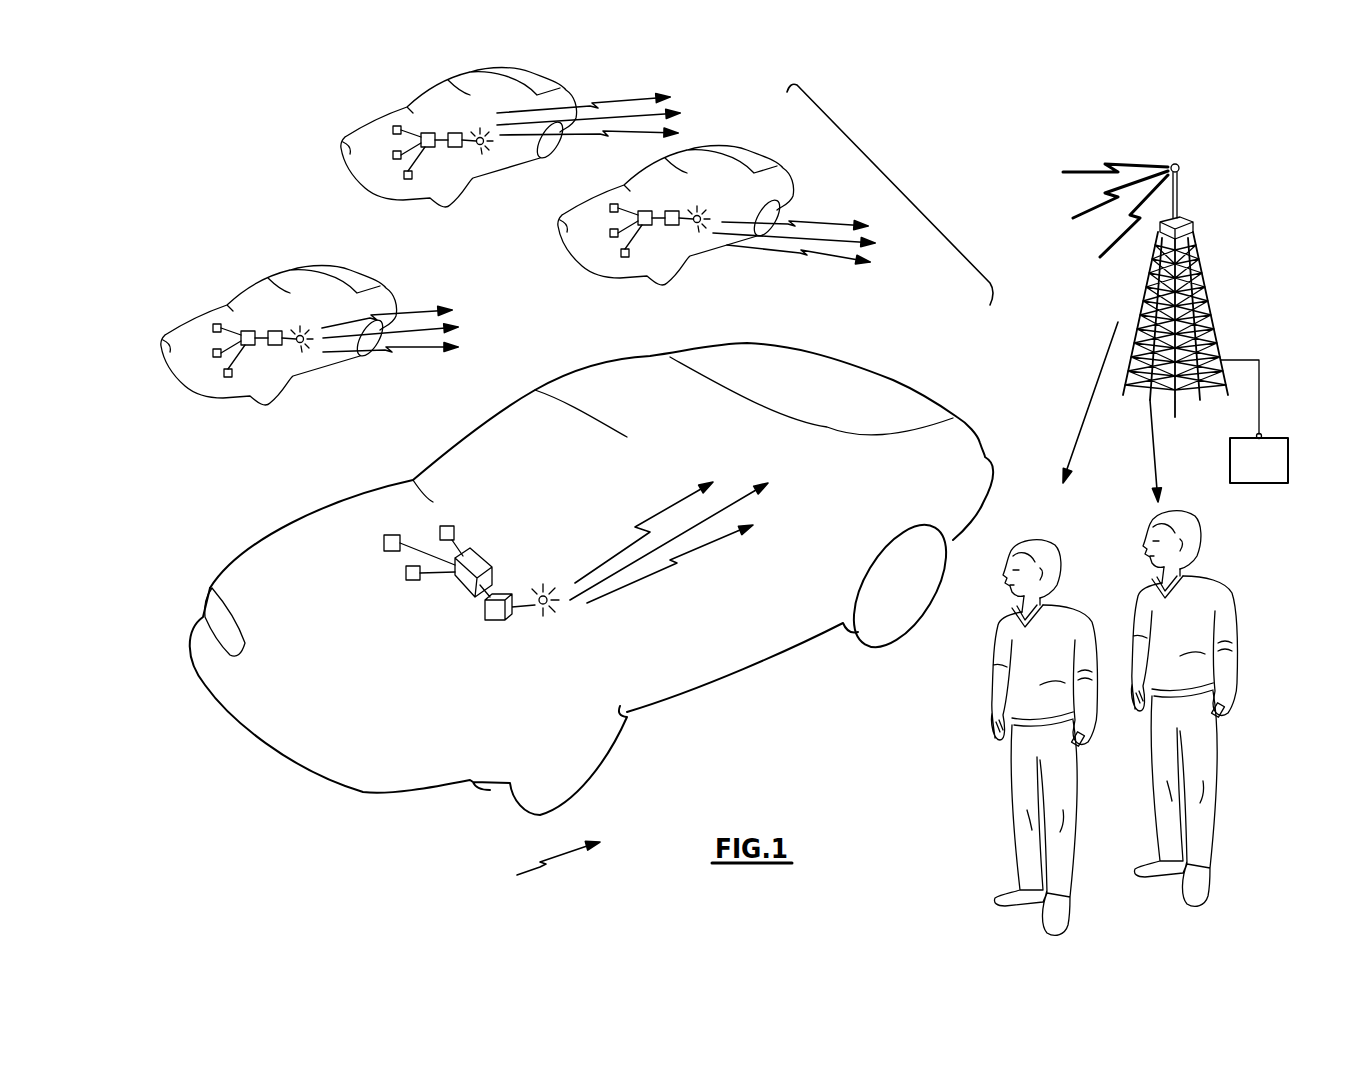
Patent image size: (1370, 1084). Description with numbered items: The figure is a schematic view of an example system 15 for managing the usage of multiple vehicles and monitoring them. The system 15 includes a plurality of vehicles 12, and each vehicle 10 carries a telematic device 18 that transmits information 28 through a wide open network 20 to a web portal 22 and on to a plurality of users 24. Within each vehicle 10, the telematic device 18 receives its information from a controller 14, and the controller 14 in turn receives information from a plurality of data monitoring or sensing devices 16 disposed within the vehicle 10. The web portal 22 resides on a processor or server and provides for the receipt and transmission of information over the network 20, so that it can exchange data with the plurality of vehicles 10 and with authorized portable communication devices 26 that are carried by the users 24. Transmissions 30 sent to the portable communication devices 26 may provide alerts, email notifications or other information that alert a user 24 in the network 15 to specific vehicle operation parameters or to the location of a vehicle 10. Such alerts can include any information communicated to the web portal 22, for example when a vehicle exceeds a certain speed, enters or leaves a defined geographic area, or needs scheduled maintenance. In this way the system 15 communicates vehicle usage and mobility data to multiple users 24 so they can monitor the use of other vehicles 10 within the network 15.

The vehicle 10 is at (577, 442).
The plurality of vehicles 12 is at (902, 188).
The controller 14 is at (477, 553).
The system for managing vehicle usage 15 is at (543, 868).
The data monitoring or sensing devices 16 is at (391, 552).
The telematic device 18 is at (495, 622).
The wide open network 20 is at (1205, 255).
The web portal 22 is at (1278, 462).
The users 24 is at (1114, 723).
The portable communication devices 26 is at (1088, 740).
The information 28 is at (713, 575).
The transmissions 30 is at (1062, 407).